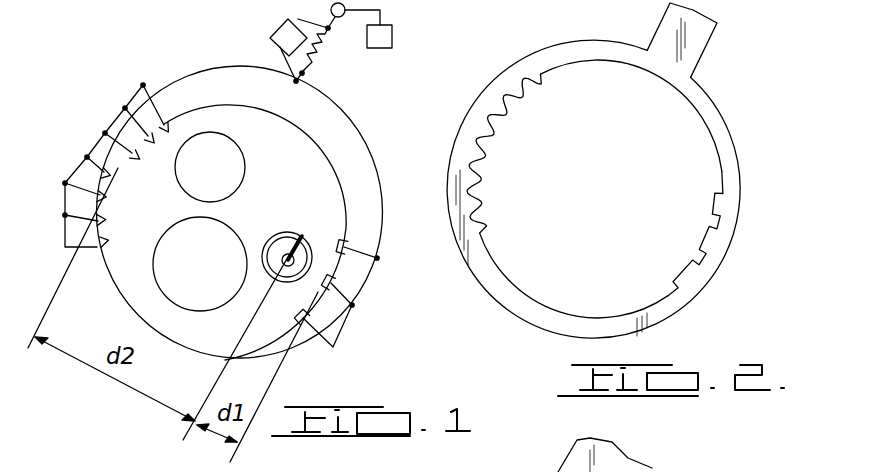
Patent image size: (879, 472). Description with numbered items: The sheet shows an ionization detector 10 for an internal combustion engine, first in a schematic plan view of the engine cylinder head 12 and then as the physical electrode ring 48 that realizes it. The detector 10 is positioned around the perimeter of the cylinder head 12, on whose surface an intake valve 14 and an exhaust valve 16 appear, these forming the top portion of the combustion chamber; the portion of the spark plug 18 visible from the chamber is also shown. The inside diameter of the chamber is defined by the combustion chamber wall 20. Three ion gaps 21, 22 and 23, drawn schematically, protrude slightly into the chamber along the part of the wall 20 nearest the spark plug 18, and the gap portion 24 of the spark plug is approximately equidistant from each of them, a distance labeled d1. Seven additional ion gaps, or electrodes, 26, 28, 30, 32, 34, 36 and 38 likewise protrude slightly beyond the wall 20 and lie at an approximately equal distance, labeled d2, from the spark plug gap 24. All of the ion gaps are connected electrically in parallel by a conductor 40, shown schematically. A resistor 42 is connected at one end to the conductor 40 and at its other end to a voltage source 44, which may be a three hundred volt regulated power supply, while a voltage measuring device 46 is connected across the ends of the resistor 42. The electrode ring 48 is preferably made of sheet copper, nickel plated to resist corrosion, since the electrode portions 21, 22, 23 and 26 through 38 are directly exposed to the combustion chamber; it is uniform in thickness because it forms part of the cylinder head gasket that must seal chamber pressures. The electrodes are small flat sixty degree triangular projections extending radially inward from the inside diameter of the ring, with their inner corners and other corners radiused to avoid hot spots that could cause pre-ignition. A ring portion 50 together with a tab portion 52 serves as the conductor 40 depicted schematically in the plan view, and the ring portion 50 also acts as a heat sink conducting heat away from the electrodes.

In FIG. 1, the ionization detector 10 is at (80, 86).
In FIG. 1, the engine cylinder head 12 is at (316, 172).
In FIG. 1, the intake valve 14 is at (187, 315).
In FIG. 1, the exhaust valve 16 is at (247, 170).
In FIG. 1, the spark plug 18 is at (310, 233).
In FIG. 1, the combustion chamber wall 20 is at (352, 142).
In FIG. 1, the ion gap 21 is at (345, 240).
In FIG. 2, the ion gap 21 is at (713, 202).
In FIG. 1, the ion gap 22 is at (348, 285).
In FIG. 2, the ion gap 22 is at (710, 228).
In FIG. 1, the ion gap 23 is at (300, 318).
In FIG. 2, the ion gap 23 is at (694, 263).
In FIG. 1, the gap portion 24 is at (280, 252).
In FIG. 1, the ion gap 26 is at (106, 244).
In FIG. 2, the ion gap 26 is at (474, 216).
In FIG. 1, the ion gap 28 is at (106, 220).
In FIG. 2, the ion gap 28 is at (470, 196).
In FIG. 1, the ion gap 30 is at (98, 203).
In FIG. 2, the ion gap 30 is at (471, 171).
In FIG. 1, the ion gap 32 is at (111, 177).
In FIG. 2, the ion gap 32 is at (478, 146).
In FIG. 1, the ion gap 34 is at (138, 153).
In FIG. 2, the ion gap 34 is at (490, 123).
In FIG. 1, the ion gap 36 is at (128, 124).
In FIG. 2, the ion gap 36 is at (505, 104).
In FIG. 1, the ion gap 38 is at (172, 125).
In FIG. 2, the ion gap 38 is at (526, 86).
In FIG. 1, the conductor 40 is at (199, 68).
In FIG. 1, the resistor 42 is at (316, 52).
In FIG. 1, the voltage source 44 is at (394, 35).
In FIG. 1, the voltage measuring device 46 is at (272, 28).
In FIG. 2, the electrode ring 48 is at (728, 270).
In FIG. 2, the ring portion 50 is at (713, 110).
In FIG. 2, the tab portion 52 is at (668, 6).